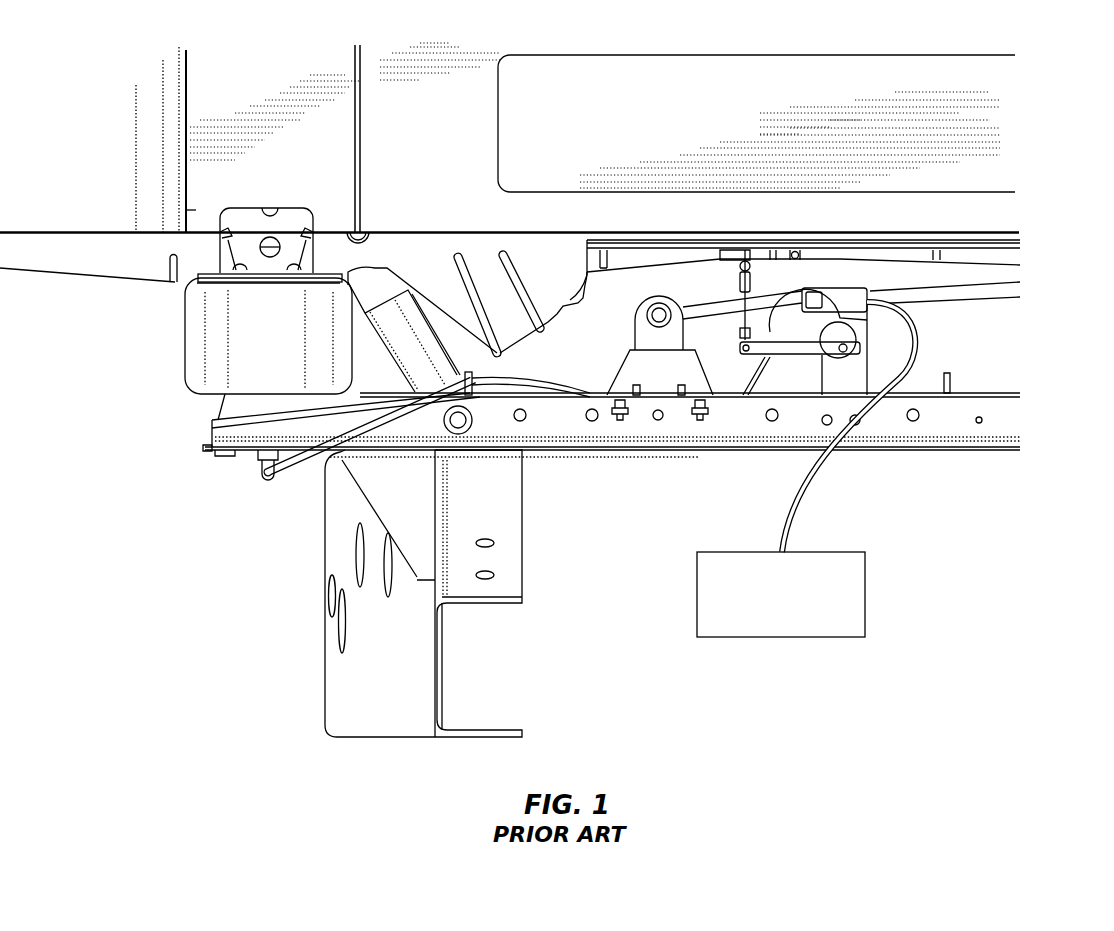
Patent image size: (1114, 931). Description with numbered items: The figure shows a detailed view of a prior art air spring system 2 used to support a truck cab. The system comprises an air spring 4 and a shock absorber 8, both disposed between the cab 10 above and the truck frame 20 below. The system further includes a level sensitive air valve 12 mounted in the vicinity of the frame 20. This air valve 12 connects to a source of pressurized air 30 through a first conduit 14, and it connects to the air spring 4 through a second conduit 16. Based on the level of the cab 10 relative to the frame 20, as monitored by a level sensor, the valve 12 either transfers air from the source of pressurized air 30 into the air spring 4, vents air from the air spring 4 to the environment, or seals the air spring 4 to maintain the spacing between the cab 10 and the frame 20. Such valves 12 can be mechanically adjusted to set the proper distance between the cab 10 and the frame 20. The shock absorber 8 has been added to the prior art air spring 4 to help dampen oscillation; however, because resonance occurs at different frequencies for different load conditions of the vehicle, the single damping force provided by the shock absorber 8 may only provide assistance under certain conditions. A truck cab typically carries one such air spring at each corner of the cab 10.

The air spring system 2 is at (160, 362).
The air spring 4 is at (215, 335).
The shock absorber 8 is at (430, 367).
The cab 10 is at (670, 107).
The level sensitive air valve 12 is at (863, 348).
The first conduit 14 is at (803, 478).
The second conduit 16 is at (525, 382).
The truck frame 20 is at (937, 420).
The source of pressurized air 30 is at (771, 627).